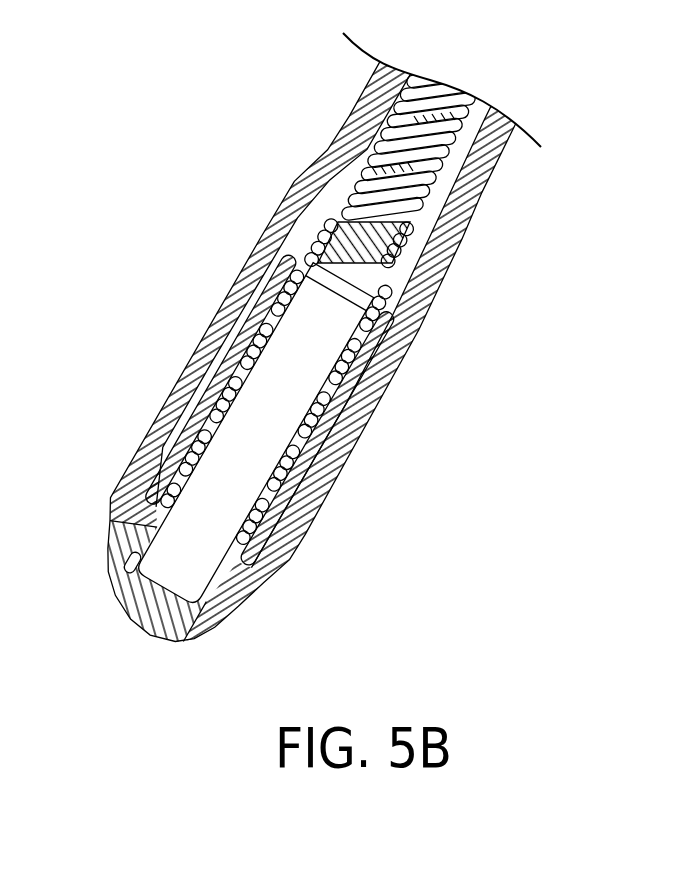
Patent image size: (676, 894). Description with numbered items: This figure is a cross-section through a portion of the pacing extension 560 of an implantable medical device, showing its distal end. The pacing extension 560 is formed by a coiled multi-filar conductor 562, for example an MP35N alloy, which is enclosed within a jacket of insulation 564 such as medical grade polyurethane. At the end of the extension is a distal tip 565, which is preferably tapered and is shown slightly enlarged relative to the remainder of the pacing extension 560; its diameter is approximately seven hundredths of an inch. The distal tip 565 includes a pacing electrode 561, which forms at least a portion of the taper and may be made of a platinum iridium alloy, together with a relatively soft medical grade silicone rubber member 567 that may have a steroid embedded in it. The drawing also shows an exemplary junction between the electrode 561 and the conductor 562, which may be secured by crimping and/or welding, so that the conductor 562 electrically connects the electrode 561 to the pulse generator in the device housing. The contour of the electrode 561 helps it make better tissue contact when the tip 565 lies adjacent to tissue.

The pacing extension 560 is at (268, 126).
The pacing electrode 561 is at (273, 563).
The coiled multi-filar conductor 562 is at (398, 238).
The jacket of insulation 564 is at (487, 163).
The distal tip 565 is at (222, 204).
The silicone rubber member 567 is at (155, 632).